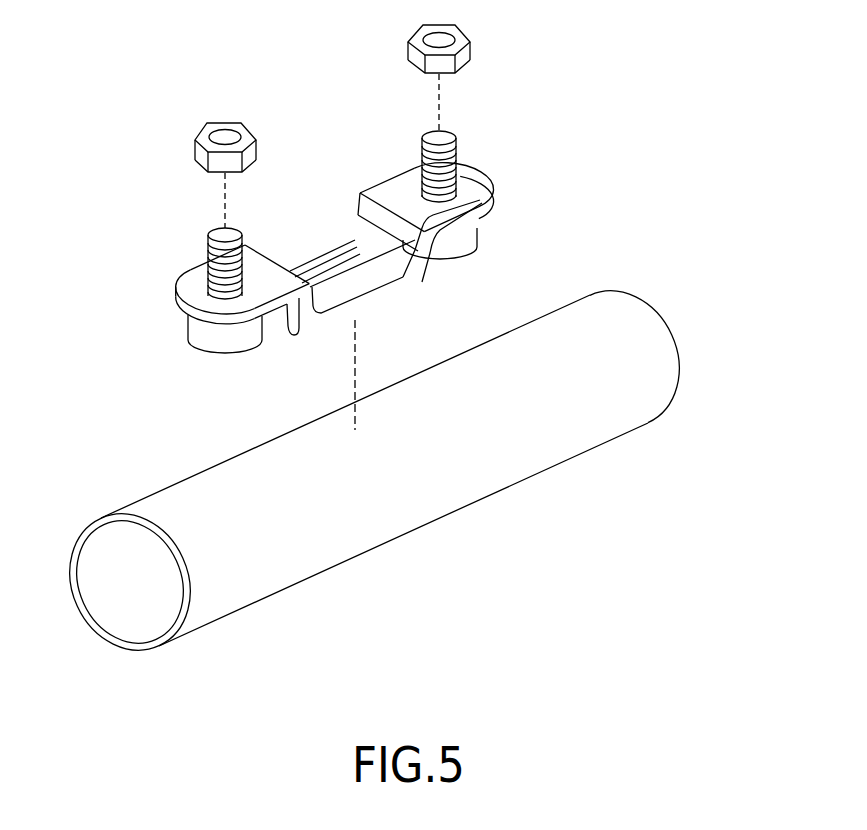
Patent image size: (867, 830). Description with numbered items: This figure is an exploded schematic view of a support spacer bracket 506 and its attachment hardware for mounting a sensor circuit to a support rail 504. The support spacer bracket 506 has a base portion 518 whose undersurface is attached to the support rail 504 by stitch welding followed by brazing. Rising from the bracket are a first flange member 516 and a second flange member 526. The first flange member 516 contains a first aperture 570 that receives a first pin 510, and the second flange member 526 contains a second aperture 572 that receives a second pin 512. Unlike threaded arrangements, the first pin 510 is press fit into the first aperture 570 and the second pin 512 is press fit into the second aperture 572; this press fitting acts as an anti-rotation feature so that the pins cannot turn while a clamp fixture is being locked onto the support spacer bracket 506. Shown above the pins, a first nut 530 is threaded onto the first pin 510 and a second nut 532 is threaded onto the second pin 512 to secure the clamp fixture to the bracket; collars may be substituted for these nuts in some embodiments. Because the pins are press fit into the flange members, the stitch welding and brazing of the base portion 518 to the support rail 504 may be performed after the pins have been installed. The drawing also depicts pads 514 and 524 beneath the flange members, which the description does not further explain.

The support rail 504 is at (590, 450).
The support spacer bracket 506 is at (400, 280).
The first pin 510 is at (210, 245).
The second pin 512 is at (460, 138).
The first pad 514 is at (198, 340).
The first flange member 516 is at (180, 288).
The base portion 518 is at (322, 335).
The second pad 524 is at (478, 255).
The second flange member 526 is at (480, 180).
The first nut 530 is at (202, 128).
The second nut 532 is at (462, 30).
The first aperture 570 is at (182, 303).
The second aperture 572 is at (482, 196).